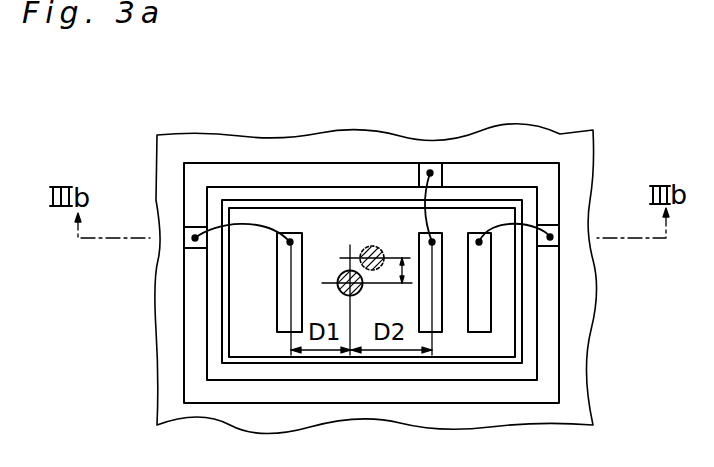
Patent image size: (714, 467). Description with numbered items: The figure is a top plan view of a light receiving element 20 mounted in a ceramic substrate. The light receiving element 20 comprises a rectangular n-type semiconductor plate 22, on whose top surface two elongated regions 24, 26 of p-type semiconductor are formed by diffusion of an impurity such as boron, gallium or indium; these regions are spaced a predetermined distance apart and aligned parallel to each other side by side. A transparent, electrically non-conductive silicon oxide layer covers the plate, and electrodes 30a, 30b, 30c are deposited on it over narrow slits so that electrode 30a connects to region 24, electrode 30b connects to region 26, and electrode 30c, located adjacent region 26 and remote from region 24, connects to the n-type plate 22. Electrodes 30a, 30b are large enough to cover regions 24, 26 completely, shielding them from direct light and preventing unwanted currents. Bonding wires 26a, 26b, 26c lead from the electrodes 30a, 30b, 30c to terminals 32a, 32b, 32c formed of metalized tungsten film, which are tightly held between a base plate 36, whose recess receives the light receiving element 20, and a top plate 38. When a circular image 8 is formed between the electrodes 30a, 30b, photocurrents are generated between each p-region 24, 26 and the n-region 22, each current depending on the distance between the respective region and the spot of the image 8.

The image 8 is at (343, 270).
The light receiving element 20 is at (372, 224).
The n-type semiconductor plate 22 is at (499, 320).
The elongated region of p-type semiconductor 24 is at (197, 350).
The elongated region of p-type semiconductor 26 is at (521, 350).
The bonding wire 26a is at (246, 222).
The bonding wire 26b is at (427, 197).
The bonding wire 26c is at (530, 205).
The electrode 30a is at (286, 259).
The electrode 30b is at (434, 262).
The electrode 30c is at (479, 286).
The terminal 32a is at (192, 228).
The terminal 32b is at (428, 163).
The terminal 32c is at (555, 224).
The base plate 36 is at (288, 187).
The top plate 38 is at (331, 148).